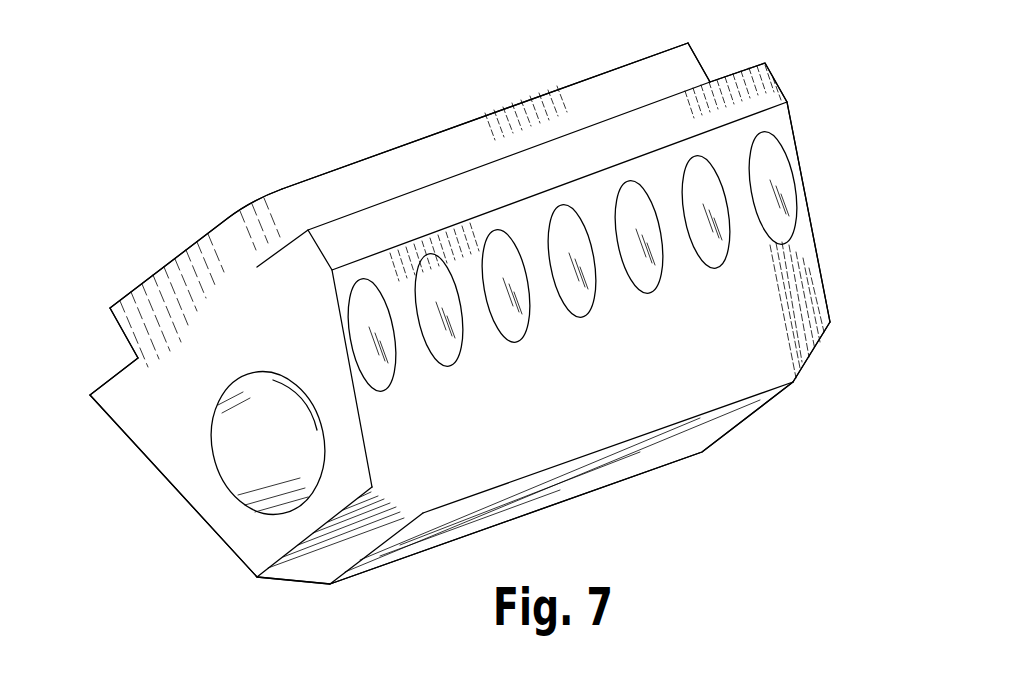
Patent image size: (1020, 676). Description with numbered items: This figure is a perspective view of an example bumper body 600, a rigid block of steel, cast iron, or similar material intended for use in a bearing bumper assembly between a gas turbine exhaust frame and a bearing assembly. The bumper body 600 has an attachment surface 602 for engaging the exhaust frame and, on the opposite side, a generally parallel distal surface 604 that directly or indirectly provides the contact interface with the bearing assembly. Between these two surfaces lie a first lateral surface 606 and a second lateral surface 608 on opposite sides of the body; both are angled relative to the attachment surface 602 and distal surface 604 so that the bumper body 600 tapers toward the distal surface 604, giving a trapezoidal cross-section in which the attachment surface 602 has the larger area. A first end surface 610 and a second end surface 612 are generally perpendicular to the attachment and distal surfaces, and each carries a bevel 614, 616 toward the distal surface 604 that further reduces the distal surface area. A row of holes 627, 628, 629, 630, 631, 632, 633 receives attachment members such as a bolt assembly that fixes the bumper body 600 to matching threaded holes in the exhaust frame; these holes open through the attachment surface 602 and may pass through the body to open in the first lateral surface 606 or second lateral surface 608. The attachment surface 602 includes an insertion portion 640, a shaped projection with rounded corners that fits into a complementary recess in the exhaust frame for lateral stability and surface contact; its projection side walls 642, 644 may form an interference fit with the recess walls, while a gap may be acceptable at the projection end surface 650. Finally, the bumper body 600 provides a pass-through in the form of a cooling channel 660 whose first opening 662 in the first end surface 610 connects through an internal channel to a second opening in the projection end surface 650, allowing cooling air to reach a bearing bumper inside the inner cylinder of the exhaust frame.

The bumper body 600 is at (705, 482).
The attachment surface 602 is at (585, 78).
The distal surface 604 is at (447, 532).
The first lateral surface 606 is at (798, 273).
The second lateral surface 608 is at (140, 463).
The first end surface 610 is at (128, 418).
The second end surface 612 is at (825, 297).
The bevel 614 is at (302, 563).
The bevel 616 is at (813, 352).
The hole 627 is at (385, 355).
The hole 628 is at (452, 335).
The hole 629 is at (520, 310).
The hole 630 is at (585, 285).
The hole 631 is at (652, 260).
The hole 632 is at (718, 237).
The hole 633 is at (775, 177).
The insertion portion 640 is at (172, 288).
The projection side wall 642 is at (135, 323).
The projection side wall 644 is at (388, 172).
The projection end surface 650 is at (467, 120).
The cooling channel 660 is at (253, 402).
The first opening 662 is at (238, 500).